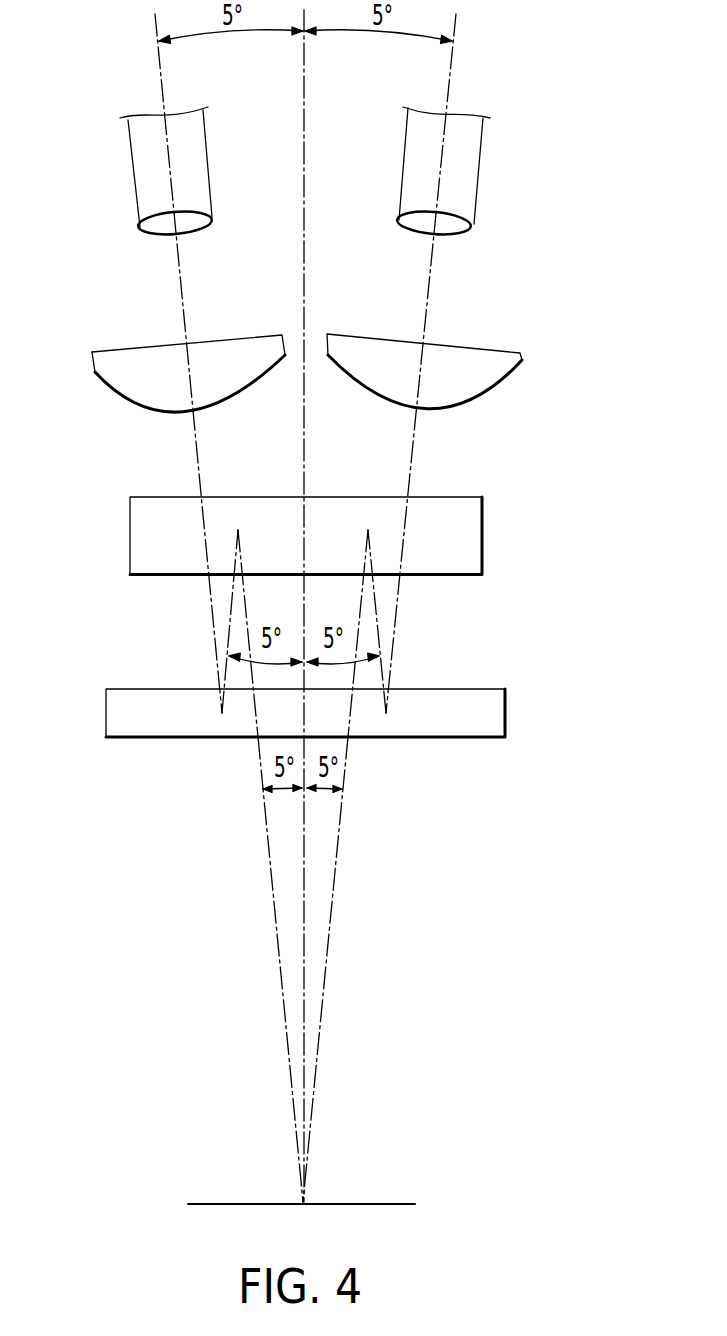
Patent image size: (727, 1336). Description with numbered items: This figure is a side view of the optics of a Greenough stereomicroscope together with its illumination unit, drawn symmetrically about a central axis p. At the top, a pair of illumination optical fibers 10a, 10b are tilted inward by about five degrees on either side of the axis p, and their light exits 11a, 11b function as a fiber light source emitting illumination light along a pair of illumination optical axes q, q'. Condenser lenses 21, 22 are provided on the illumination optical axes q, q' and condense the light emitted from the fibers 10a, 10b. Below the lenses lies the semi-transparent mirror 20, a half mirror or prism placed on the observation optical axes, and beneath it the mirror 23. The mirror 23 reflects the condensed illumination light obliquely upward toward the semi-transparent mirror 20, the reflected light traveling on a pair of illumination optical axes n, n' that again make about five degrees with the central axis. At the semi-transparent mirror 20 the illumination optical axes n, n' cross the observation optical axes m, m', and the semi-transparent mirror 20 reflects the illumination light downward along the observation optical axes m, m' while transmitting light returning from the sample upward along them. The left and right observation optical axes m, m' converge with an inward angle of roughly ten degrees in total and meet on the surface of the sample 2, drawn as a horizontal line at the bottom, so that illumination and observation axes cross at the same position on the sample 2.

The sample 2 is at (352, 1204).
The illumination optical fiber 10a is at (476, 190).
The illumination optical fiber 10b is at (134, 189).
The light exit 11a is at (448, 227).
The light exit 11b is at (160, 228).
The semi-transparent mirror 20 is at (482, 537).
The condenser lens 21 is at (473, 390).
The condenser lens 22 is at (137, 388).
The mirror 23 is at (505, 712).
The central axis p is at (305, 170).
The illumination optical axis q is at (440, 363).
The illumination optical axis q' is at (166, 363).
The illumination optical axis n is at (409, 633).
The illumination optical axis n' is at (194, 633).
The observation optical axis m is at (353, 969).
The observation optical axis m' is at (250, 969).